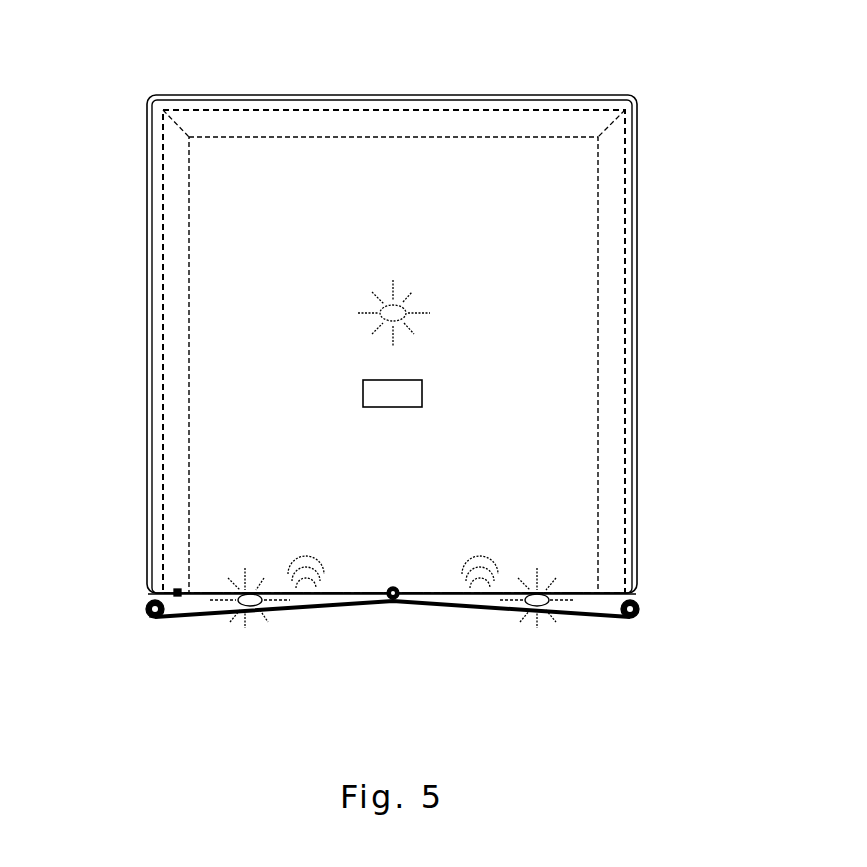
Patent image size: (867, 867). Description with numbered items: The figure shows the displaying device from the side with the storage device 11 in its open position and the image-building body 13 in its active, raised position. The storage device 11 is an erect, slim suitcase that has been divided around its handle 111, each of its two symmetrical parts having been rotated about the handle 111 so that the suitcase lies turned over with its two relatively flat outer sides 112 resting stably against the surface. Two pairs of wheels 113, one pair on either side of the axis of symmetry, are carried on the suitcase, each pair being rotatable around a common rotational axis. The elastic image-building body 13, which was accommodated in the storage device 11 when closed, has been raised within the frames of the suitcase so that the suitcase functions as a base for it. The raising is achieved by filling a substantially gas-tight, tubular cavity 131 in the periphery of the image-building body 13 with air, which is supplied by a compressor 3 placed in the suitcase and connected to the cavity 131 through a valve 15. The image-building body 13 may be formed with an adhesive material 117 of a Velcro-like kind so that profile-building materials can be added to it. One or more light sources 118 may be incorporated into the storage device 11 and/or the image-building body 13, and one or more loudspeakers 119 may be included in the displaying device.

The compressor 3 is at (215, 605).
The storage device 11 is at (340, 610).
The image-building body 13 is at (630, 96).
The valve 15 is at (178, 592).
The handle 111 is at (396, 599).
The outer sides 112 is at (515, 615).
The wheels 113 is at (155, 609).
The adhesive material 117 is at (425, 395).
The light sources 118 is at (405, 305).
The loudspeakers 119 is at (448, 592).
The tubular cavity 131 is at (178, 172).